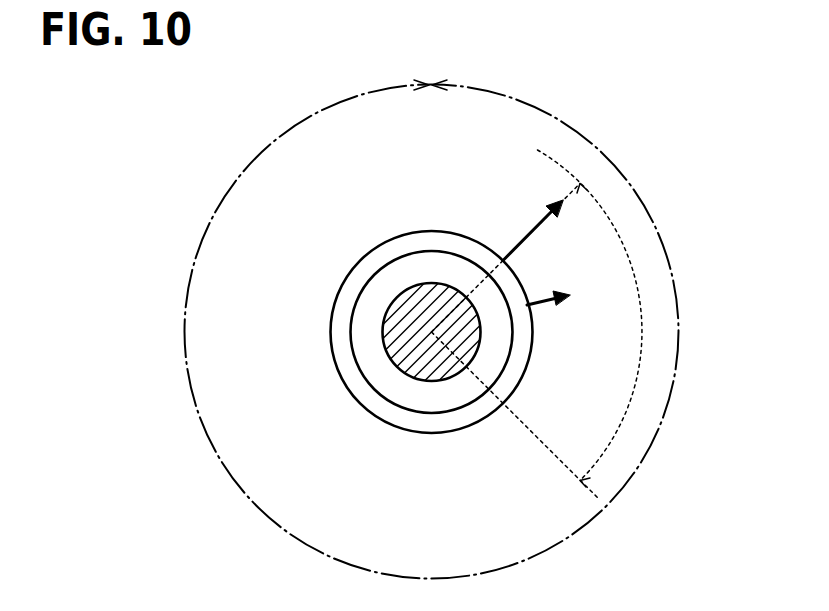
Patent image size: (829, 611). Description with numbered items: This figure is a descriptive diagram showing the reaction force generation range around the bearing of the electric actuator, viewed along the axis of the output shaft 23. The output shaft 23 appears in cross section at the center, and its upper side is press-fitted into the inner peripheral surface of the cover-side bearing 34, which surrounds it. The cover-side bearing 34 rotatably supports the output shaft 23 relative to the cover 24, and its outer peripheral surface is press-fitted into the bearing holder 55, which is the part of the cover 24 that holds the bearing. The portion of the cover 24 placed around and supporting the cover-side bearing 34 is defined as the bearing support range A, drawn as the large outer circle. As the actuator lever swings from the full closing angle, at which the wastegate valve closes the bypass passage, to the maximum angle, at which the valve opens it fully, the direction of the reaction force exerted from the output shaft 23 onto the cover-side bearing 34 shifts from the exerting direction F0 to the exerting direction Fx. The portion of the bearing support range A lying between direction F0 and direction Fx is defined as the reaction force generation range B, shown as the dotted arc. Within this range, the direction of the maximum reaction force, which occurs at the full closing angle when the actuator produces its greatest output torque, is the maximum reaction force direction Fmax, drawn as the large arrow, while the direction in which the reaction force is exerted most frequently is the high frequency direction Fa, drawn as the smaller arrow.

The output shaft 23 is at (408, 313).
The cover-side bearing 34 is at (368, 315).
The bearing holder 55 is at (342, 347).
The cover 24 is at (333, 425).
The bearing support range A is at (565, 122).
The reaction force generation range B is at (630, 258).
The exerting direction of the reaction force at the full closing angle F0 is at (521, 149).
The maximum reaction force direction Fmax is at (530, 225).
The high frequency direction Fa is at (543, 307).
The exerting direction of the reaction force at the maximum angle Fx is at (557, 458).